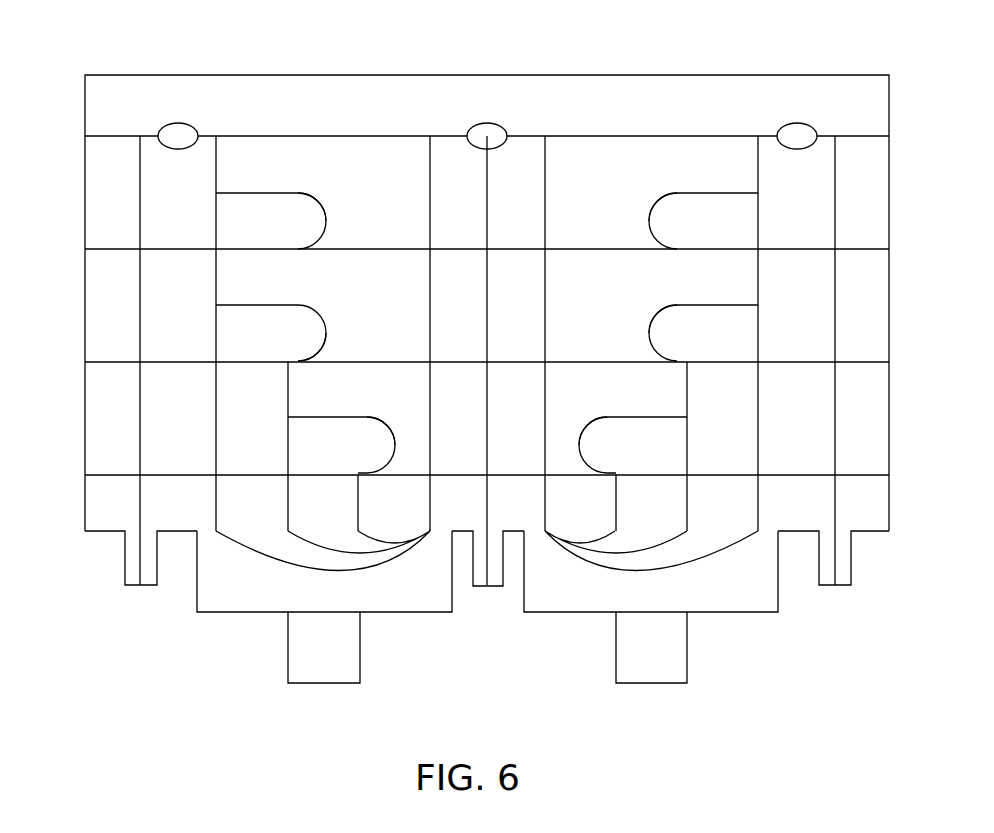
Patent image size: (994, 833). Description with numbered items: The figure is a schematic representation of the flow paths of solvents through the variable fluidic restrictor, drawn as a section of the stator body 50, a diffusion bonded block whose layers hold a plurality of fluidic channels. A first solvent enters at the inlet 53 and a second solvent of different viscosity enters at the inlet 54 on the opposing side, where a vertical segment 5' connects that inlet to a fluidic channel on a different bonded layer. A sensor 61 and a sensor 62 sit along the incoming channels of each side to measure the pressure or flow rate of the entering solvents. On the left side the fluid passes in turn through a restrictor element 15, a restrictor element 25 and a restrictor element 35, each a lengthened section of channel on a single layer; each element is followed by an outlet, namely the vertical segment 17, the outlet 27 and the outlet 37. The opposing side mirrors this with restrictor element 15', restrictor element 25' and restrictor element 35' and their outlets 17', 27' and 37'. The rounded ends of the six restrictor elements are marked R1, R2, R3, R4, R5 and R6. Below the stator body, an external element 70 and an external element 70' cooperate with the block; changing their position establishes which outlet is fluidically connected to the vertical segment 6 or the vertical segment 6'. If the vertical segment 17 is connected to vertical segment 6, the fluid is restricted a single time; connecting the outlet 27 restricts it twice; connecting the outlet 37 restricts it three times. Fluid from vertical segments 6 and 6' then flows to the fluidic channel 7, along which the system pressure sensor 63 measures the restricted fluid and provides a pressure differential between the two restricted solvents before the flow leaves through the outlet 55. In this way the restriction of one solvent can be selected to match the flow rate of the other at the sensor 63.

The stator body 50 is at (380, 75).
The sensor 61 is at (183, 123).
The sensor 62 is at (800, 123).
The sensor 63 is at (490, 123).
The inlet 53 is at (132, 577).
The inlet 54 is at (840, 560).
The outlet 55 is at (497, 583).
The vertical segment 5' is at (891, 360).
The vertical segment 6 is at (401, 333).
The vertical segment 6' is at (573, 333).
The fluidic channel 7 is at (487, 345).
The restrictor element 15 is at (271, 166).
The restrictor element 15' is at (703, 166).
The restrictor element 25 is at (287, 282).
The restrictor element 25' is at (683, 311).
The restrictor element 35 is at (341, 426).
The restrictor element 35' is at (633, 422).
The vertical segment 17 is at (124, 333).
The vertical segment 17' is at (775, 333).
The second outlet 27 is at (160, 449).
The outlet 27' is at (747, 446).
The outlet 37 is at (305, 579).
The outlet 37' is at (708, 579).
The external element 70 is at (324, 606).
The external element 70' is at (651, 606).
The first radius R1 is at (328, 198).
The second radius R2 is at (328, 342).
The third radius R3 is at (392, 424).
The fourth radius R4 is at (660, 192).
The fifth radius R5 is at (646, 320).
The sixth radius R6 is at (578, 427).